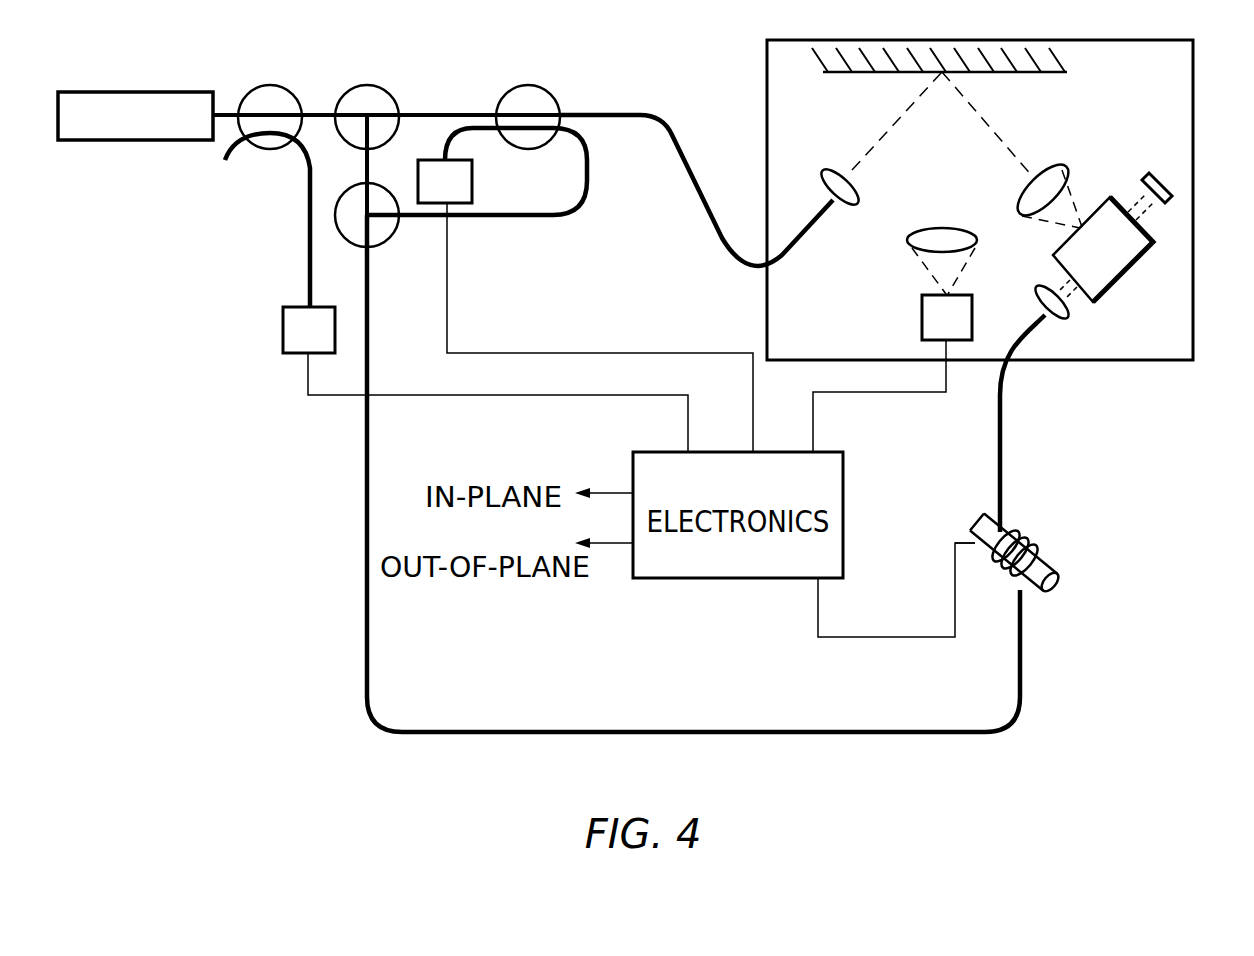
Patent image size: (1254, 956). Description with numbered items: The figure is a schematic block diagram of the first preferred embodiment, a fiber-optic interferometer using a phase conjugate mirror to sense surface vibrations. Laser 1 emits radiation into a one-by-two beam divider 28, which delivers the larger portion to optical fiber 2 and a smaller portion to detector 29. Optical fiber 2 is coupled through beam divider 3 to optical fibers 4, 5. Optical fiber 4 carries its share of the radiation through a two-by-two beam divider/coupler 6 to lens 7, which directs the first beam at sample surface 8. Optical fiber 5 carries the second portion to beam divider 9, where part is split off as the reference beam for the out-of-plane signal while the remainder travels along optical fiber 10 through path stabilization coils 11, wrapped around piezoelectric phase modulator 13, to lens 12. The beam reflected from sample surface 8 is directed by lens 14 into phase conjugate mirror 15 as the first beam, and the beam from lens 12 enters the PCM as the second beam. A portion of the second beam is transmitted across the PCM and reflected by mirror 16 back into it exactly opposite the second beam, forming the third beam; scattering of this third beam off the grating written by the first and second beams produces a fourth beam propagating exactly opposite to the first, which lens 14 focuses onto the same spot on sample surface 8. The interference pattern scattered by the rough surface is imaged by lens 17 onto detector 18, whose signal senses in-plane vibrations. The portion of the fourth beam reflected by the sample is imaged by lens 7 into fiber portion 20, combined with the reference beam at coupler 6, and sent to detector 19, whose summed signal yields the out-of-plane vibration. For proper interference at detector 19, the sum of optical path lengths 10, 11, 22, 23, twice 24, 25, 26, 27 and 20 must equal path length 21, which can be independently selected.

The laser 1 is at (126, 131).
The optical fiber 2 is at (337, 113).
The 1×2 beam divider 3 is at (388, 88).
The optical fiber 4 is at (417, 112).
The optical fiber 5 is at (362, 183).
The 2×2 beam divider/coupler 6 is at (549, 88).
The lens 7 is at (835, 172).
The sample surface 8 is at (1045, 74).
The 1×2 beam divider 9 is at (345, 229).
The optical fiber 10 is at (620, 730).
The path stabilization coils 11 is at (1020, 540).
The lens 12 is at (1043, 299).
The piezoelectric phase modulator 13 is at (976, 526).
The lens 14 is at (1050, 178).
The phase conjugate mirror 15 is at (1140, 257).
The mirror 16 is at (1170, 191).
The lens 17 is at (932, 238).
The detector 18 is at (932, 332).
The detector 19 is at (432, 196).
The portion of the optical fiber 20 is at (697, 190).
The optical path length 21 is at (495, 223).
The optical path length 22 is at (1003, 396).
The optical path length 23 is at (1072, 292).
The optical path length 24 is at (1143, 212).
The optical path length 25 is at (1082, 210).
The optical path length 26 is at (1015, 160).
The optical path length 27 is at (889, 145).
The 1×2 beam divider 28 is at (293, 88).
The detector 29 is at (294, 344).